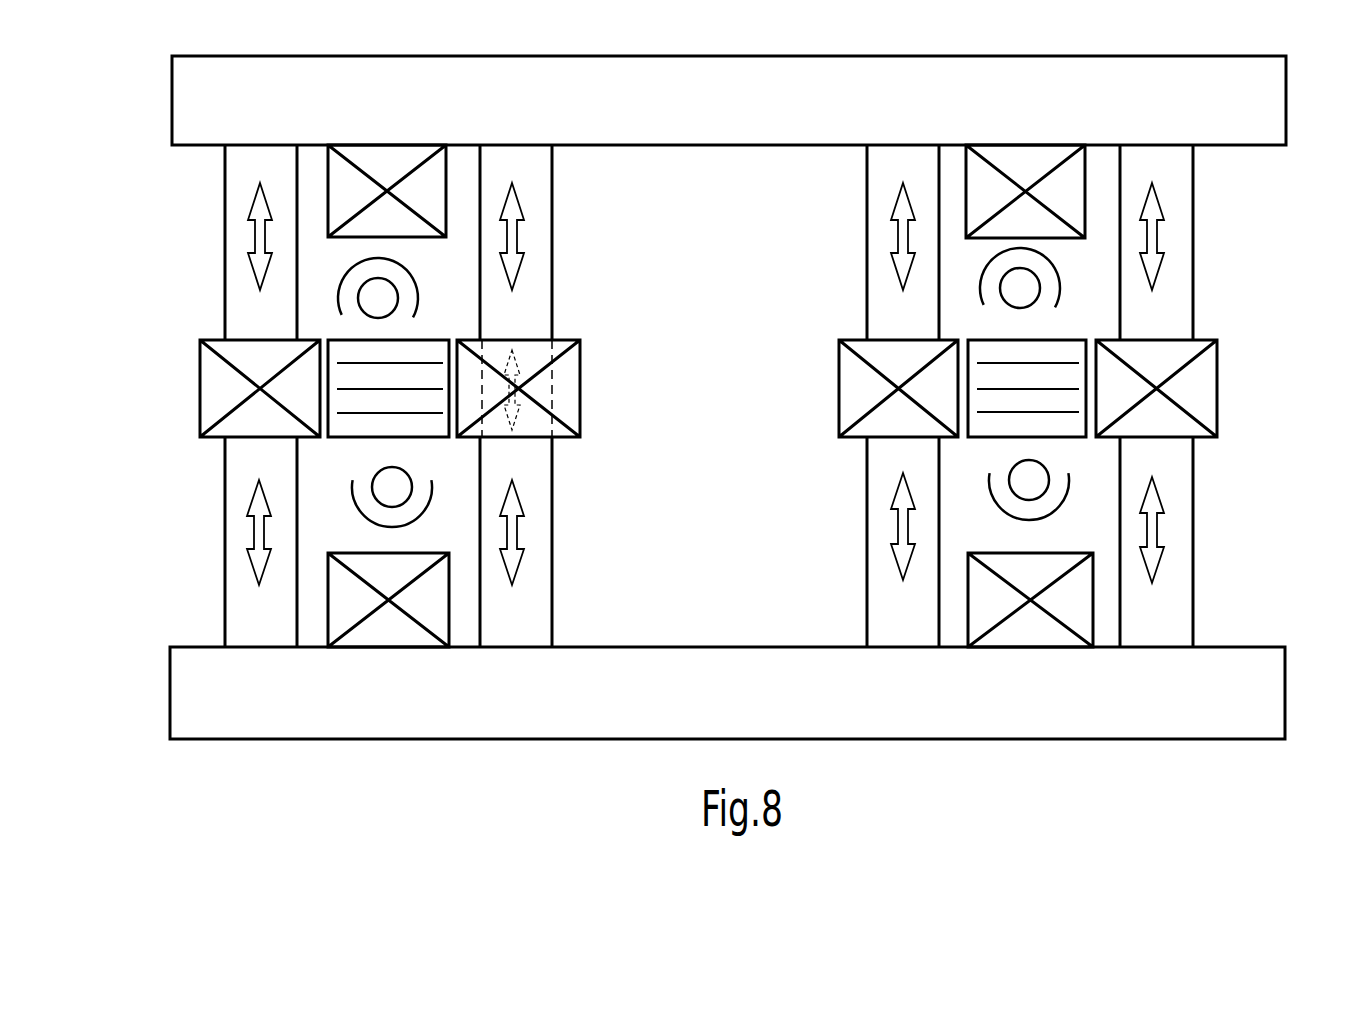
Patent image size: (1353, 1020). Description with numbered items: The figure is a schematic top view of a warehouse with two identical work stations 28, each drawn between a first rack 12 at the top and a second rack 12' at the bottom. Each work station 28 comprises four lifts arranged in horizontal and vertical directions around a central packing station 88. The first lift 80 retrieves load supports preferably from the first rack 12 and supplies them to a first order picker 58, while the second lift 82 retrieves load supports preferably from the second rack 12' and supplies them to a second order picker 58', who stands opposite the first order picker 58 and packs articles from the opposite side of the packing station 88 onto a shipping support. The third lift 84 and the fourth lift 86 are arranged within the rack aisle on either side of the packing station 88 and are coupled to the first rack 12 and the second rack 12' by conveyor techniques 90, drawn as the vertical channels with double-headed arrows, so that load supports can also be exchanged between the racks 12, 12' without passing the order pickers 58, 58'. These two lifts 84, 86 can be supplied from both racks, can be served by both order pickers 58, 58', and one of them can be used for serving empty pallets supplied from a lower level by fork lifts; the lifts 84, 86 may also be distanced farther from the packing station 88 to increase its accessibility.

The first rack 12 is at (682, 98).
The second rack 12' is at (689, 688).
The work station 28 is at (820, 328).
The first order picker 58 is at (724, 390).
The second order picker 58' is at (371, 497).
The first lift 80 is at (328, 178).
The second lift 82 is at (449, 598).
The third lift 84 is at (580, 410).
The fourth lift 86 is at (200, 390).
The packing station 88 is at (433, 437).
The conveyor techniques 90 is at (225, 268).